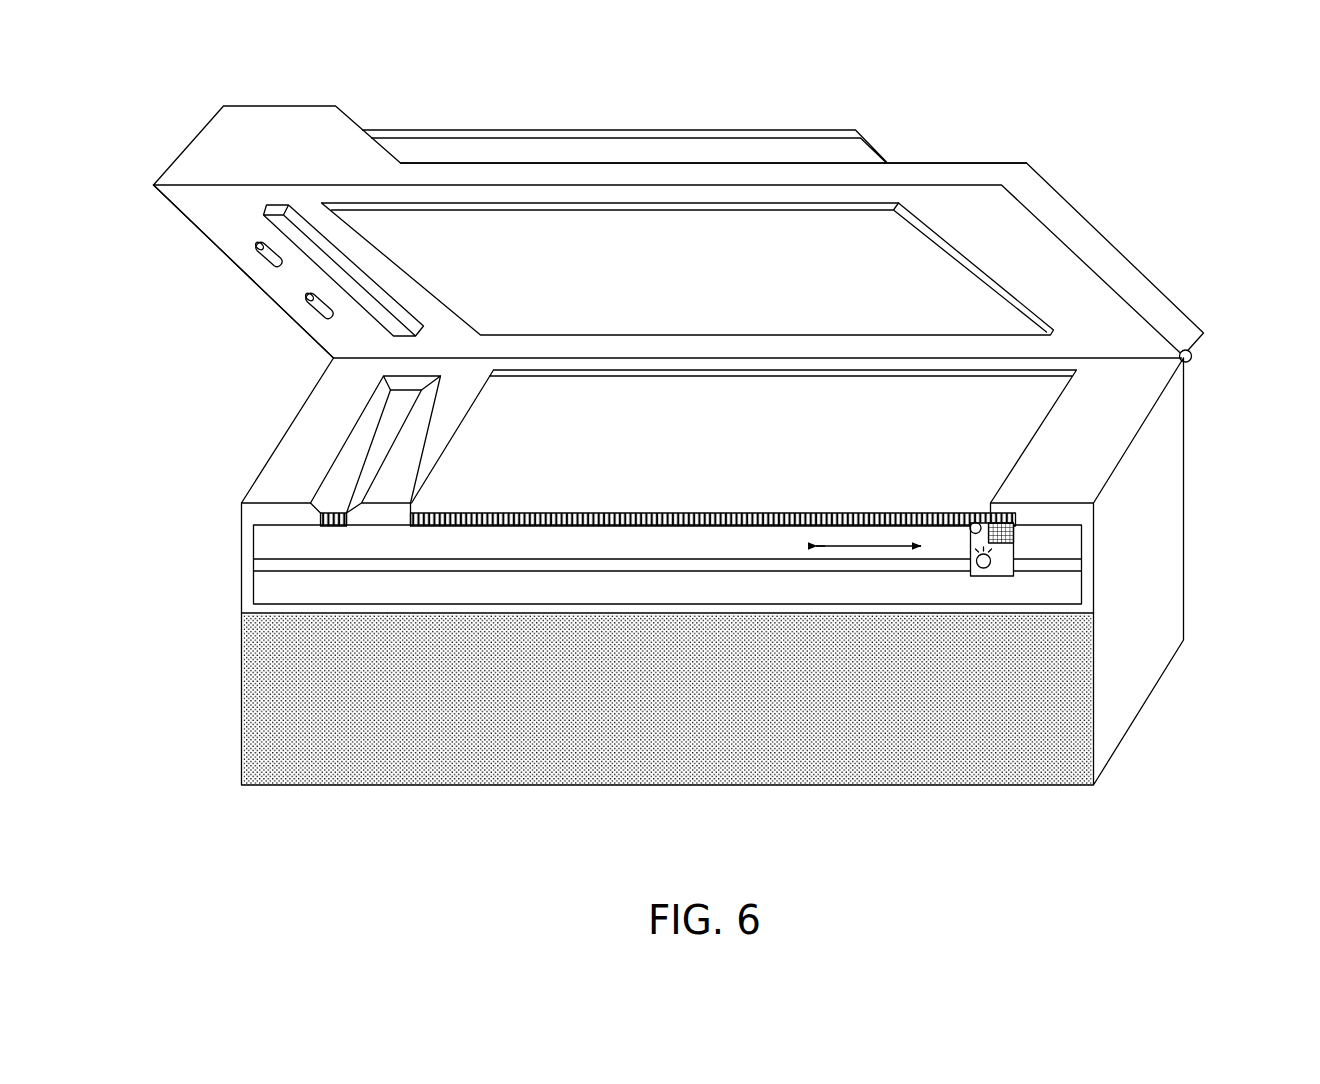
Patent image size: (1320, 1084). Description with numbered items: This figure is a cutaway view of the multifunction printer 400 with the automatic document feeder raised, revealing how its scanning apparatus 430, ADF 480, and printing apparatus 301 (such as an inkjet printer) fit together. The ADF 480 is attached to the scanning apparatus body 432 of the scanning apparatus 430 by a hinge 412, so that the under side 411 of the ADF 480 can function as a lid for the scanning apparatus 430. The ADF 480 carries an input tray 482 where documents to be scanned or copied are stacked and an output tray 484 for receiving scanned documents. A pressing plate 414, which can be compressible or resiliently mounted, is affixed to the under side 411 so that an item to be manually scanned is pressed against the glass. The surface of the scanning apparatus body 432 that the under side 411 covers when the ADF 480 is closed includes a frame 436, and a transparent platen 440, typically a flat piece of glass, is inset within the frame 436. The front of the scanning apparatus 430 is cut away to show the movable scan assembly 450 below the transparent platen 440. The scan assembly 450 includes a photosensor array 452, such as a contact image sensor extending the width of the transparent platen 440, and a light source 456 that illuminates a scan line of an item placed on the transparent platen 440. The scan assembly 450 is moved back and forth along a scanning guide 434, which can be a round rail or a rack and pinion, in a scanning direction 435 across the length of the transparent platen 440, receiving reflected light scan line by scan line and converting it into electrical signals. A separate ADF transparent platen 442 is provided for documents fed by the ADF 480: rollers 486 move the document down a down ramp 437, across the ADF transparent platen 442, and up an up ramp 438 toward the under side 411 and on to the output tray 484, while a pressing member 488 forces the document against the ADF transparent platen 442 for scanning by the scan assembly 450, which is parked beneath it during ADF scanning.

The multifunction printer 400 is at (705, 447).
The ADF 480 is at (660, 223).
The input tray 482 is at (782, 127).
The output tray 484 is at (927, 160).
The pressing member 488 is at (273, 223).
The rollers 486 is at (303, 292).
The pressing plate 414 is at (882, 232).
The under side 411 is at (228, 202).
The hinge 412 is at (1188, 353).
The scanning apparatus 430 is at (686, 582).
The frame 436 is at (287, 477).
The scanning apparatus body 432 is at (242, 528).
The scanning guide 434 is at (265, 563).
The transparent platen 440 is at (965, 442).
The down ramp 437 is at (343, 437).
The up ramp 438 is at (397, 428).
The ADF transparent platen 442 is at (348, 480).
The scanning direction 435 is at (867, 545).
The scan assembly 450 is at (1110, 573).
The photosensor array 452 is at (998, 542).
The light source 456 is at (982, 565).
The printing apparatus 301 is at (238, 755).